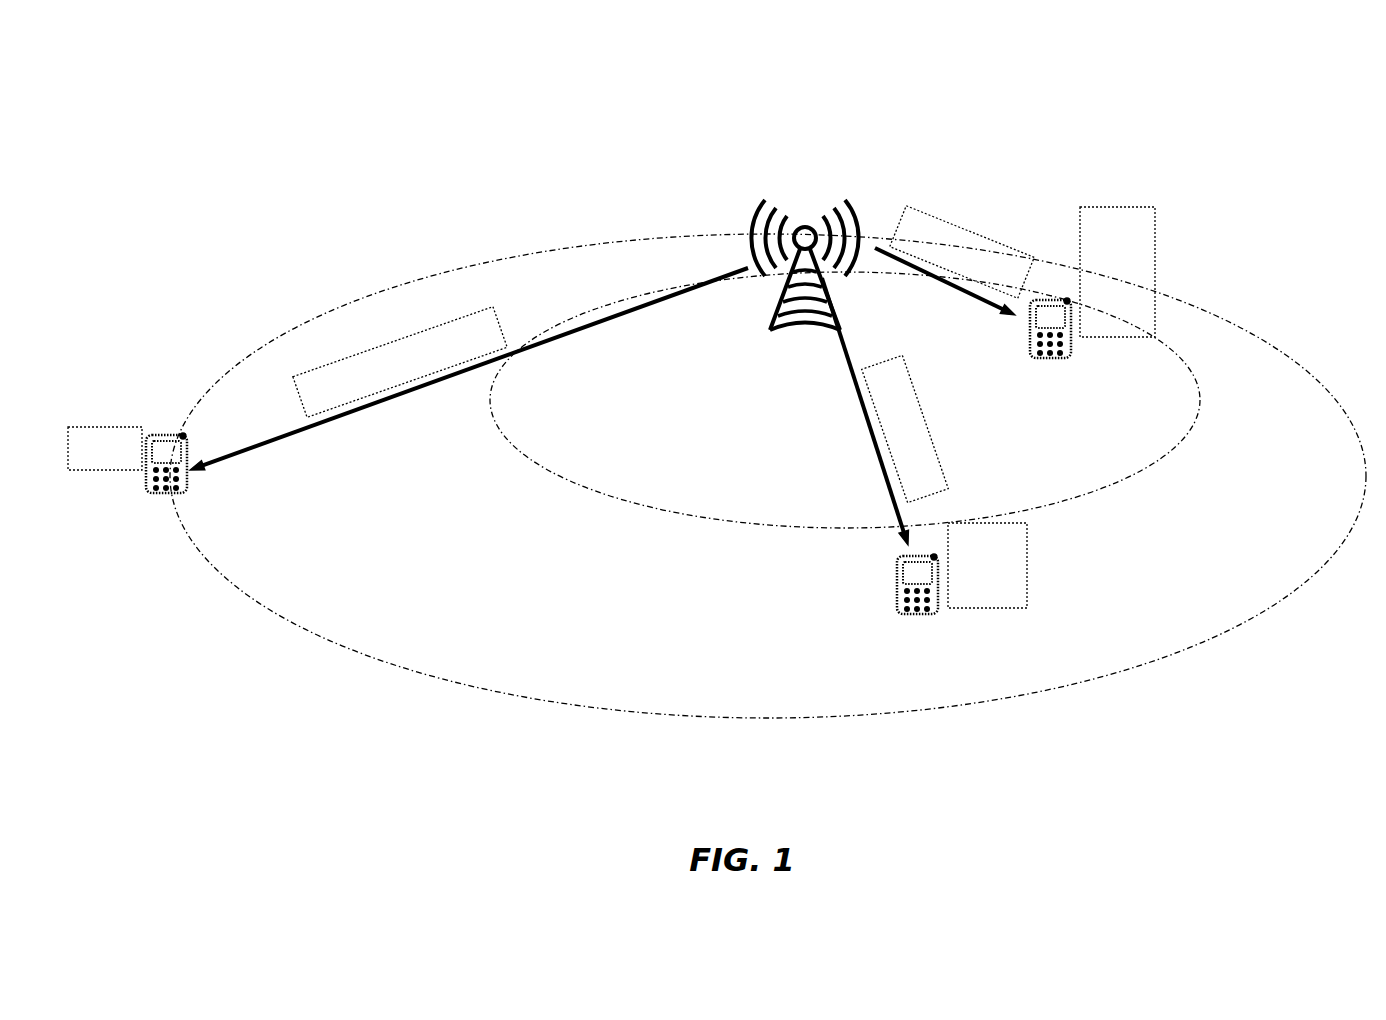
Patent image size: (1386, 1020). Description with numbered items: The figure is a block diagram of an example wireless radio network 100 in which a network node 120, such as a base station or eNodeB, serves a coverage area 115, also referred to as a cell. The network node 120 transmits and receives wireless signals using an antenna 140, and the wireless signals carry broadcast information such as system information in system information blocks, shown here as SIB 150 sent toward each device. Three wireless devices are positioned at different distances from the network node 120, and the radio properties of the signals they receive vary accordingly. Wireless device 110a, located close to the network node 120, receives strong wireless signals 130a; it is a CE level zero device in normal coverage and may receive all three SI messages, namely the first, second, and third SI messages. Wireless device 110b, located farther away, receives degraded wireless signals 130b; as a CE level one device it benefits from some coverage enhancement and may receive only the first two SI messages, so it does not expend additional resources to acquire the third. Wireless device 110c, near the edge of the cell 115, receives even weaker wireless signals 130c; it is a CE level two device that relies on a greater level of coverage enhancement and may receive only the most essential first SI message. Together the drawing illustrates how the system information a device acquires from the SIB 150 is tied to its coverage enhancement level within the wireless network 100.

The wireless network 100 is at (717, 406).
The coverage area 115 is at (768, 476).
The network node 120 is at (731, 239).
The antenna 140 is at (804, 237).
The SIB 150 is at (663, 354).
The wireless signals 130a is at (930, 280).
The wireless signals 130b is at (882, 470).
The wireless signals 130c is at (403, 405).
The wireless device 110a is at (1032, 372).
The wireless device 110b is at (950, 640).
The wireless device 110c is at (178, 496).